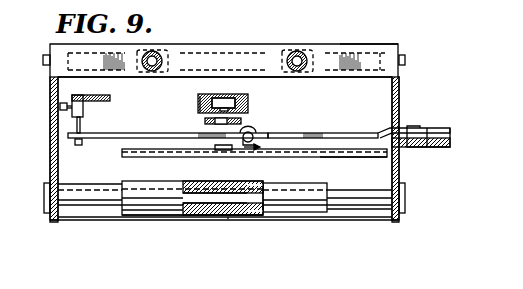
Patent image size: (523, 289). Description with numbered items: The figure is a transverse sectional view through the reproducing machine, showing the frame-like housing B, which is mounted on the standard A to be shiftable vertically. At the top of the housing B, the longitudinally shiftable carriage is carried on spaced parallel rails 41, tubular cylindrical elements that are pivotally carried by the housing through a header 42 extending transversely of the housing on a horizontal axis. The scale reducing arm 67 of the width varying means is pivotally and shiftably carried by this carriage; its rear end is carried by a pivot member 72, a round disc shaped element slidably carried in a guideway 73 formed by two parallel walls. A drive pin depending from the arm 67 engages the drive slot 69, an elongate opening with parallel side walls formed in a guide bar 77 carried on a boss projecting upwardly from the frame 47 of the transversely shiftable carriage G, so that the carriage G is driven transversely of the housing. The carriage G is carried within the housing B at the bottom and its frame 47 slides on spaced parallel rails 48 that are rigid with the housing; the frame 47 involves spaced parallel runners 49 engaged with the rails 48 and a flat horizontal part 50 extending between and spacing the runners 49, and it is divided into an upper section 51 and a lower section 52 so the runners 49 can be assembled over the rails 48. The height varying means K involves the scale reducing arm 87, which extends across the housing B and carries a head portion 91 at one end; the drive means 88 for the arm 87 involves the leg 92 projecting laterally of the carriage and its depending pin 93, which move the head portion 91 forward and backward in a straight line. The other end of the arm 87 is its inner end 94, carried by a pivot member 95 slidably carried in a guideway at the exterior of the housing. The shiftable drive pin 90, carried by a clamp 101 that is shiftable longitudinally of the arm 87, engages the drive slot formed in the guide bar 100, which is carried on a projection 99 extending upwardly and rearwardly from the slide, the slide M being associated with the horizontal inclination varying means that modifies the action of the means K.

The frame-like housing B is at (402, 82).
The header 42 is at (388, 46).
The rails 41 is at (157, 72).
The drive means 88 is at (98, 98).
The leg 92 is at (103, 101).
The pin 93 is at (82, 123).
The head portion 91 is at (76, 143).
The guideway 73 is at (206, 100).
The pivot member 72 is at (230, 98).
The scale reducing arm 67 is at (199, 108).
The drive slot 69 is at (205, 123).
The guide bar 77 is at (246, 130).
The clamp 101 is at (246, 138).
The shiftable drive pin 90 is at (262, 143).
The height varying means K is at (326, 133).
The scale reducing arm 87 is at (358, 131).
The inner end 94 is at (400, 130).
The pivot member 95 is at (415, 146).
The horizontal inclination varying means M is at (281, 156).
The guide bar 100 is at (360, 158).
The rails 48 is at (100, 193).
The upper section 51 is at (190, 178).
The projection 99 is at (200, 167).
The runners 49 is at (284, 214).
The transversely shiftable carriage G is at (314, 216).
The frame 47 is at (159, 215).
The lower section 52 is at (257, 229).
The flat horizontal part 50 is at (228, 218).
The standard A is at (511, 163).